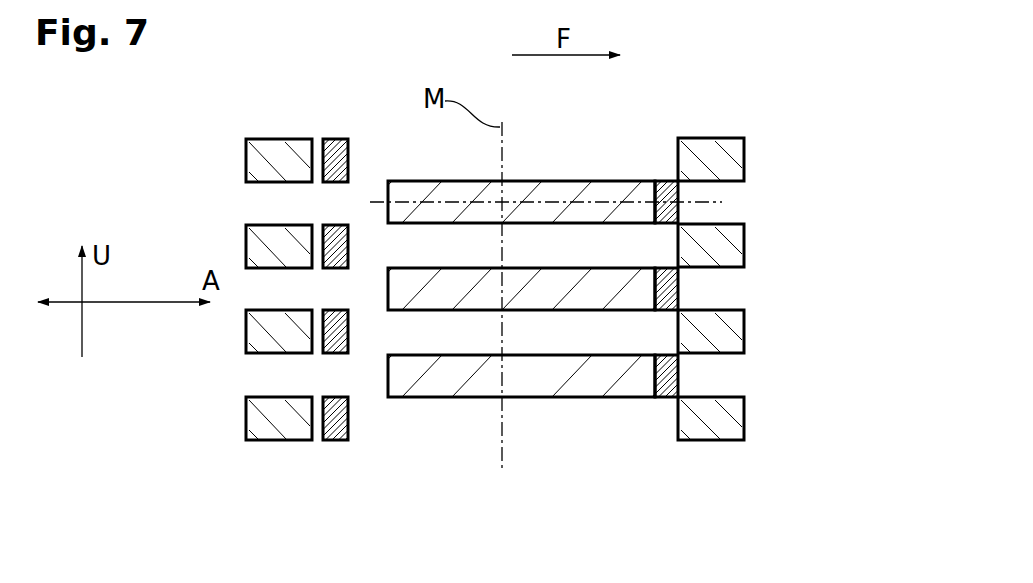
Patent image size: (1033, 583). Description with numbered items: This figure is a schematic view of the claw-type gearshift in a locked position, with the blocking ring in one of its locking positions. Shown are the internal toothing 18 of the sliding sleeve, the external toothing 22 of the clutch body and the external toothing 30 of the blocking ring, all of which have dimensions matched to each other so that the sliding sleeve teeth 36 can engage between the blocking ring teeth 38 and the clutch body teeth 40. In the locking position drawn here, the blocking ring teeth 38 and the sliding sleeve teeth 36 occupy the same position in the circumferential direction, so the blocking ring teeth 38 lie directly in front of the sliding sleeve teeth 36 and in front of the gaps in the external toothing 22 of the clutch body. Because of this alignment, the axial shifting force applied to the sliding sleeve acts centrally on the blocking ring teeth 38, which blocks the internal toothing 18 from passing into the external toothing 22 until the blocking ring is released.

The internal toothing 18 is at (521, 304).
The external toothing 22 is at (496, 297).
The external toothing 30 is at (718, 450).
The sliding sleeve teeth 36 is at (598, 188).
The blocking ring teeth 38 is at (338, 150).
The clutch body teeth 40 is at (274, 148).